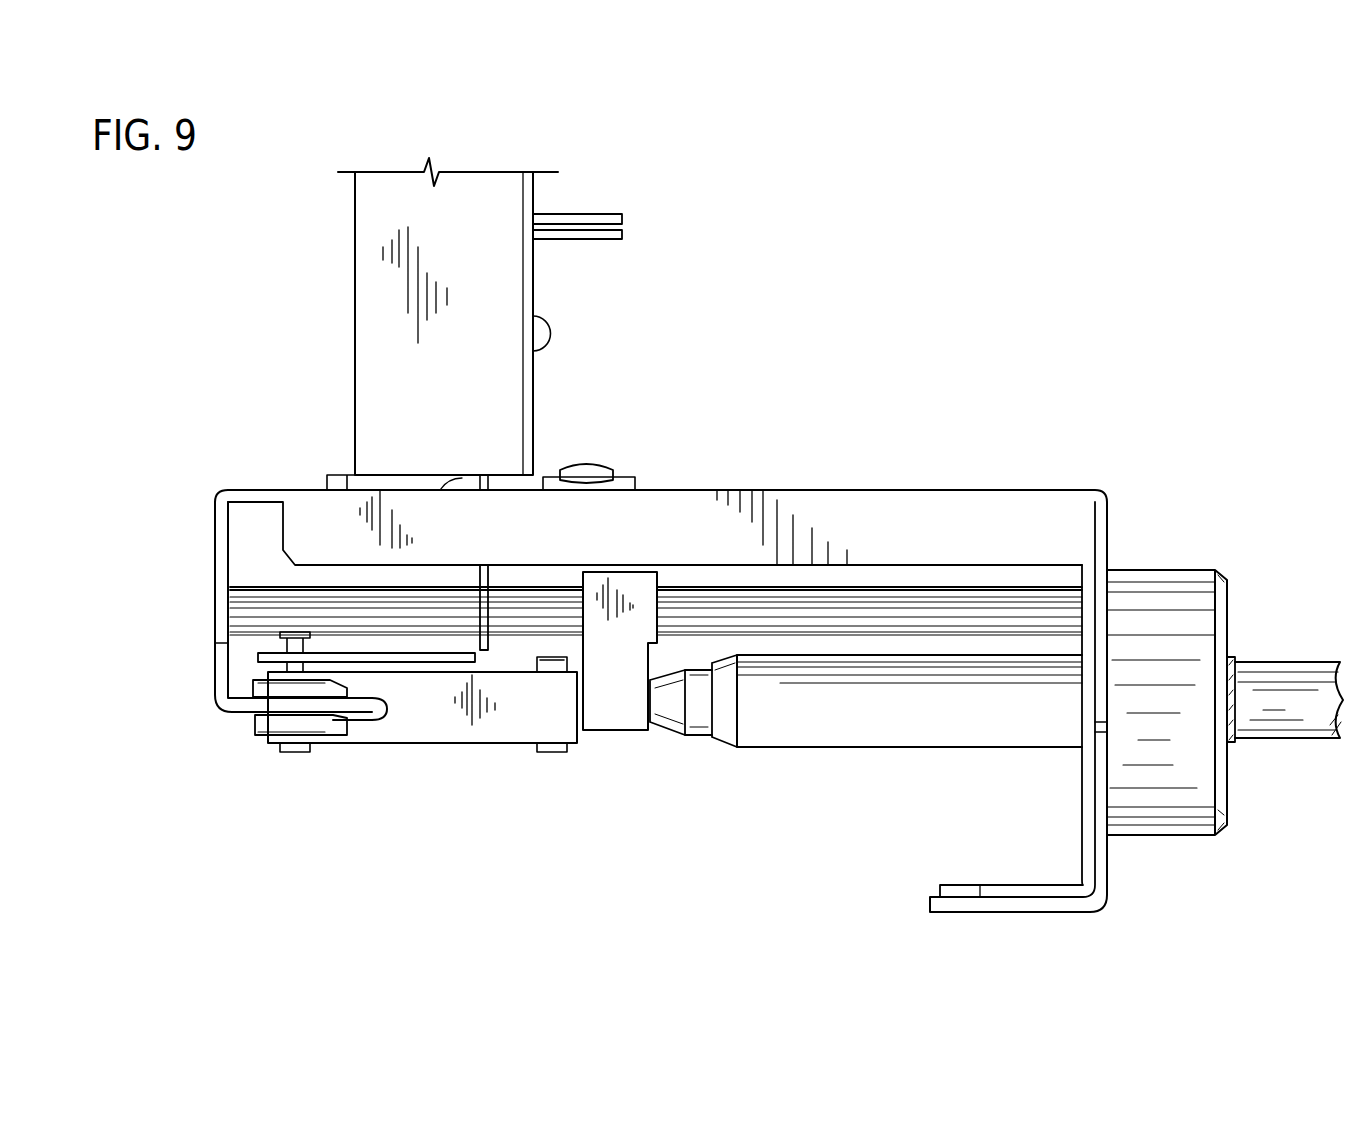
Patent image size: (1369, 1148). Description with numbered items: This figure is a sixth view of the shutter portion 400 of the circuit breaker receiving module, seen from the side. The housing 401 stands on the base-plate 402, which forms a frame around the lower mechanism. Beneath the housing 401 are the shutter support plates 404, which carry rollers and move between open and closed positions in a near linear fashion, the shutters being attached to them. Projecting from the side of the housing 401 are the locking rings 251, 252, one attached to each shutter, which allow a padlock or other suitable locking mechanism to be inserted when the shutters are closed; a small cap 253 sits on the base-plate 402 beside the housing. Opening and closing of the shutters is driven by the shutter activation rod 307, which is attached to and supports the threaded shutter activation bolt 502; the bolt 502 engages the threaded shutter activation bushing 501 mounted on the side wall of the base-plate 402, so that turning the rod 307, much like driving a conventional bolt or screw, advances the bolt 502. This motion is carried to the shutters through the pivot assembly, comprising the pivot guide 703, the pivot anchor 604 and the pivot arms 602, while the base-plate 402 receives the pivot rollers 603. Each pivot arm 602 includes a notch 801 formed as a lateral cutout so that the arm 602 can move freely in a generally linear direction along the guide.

The shutter portion 400 is at (945, 288).
The housing 401 is at (456, 407).
The base-plate 402 is at (953, 539).
The shutter support plates 404 is at (477, 580).
The locking ring 251 is at (612, 212).
The locking ring 252 is at (610, 240).
The cap 253 is at (585, 463).
The shutter activation bushing 501 is at (1150, 620).
The shutter activation bolt 502 is at (792, 720).
The shutter activation rod 307 is at (1273, 703).
The pivot arms 602 is at (430, 718).
The pivot rollers 603 is at (268, 690).
The pivot anchor 604 is at (643, 580).
The pivot guide 703 is at (858, 612).
The notch 801 is at (292, 648).